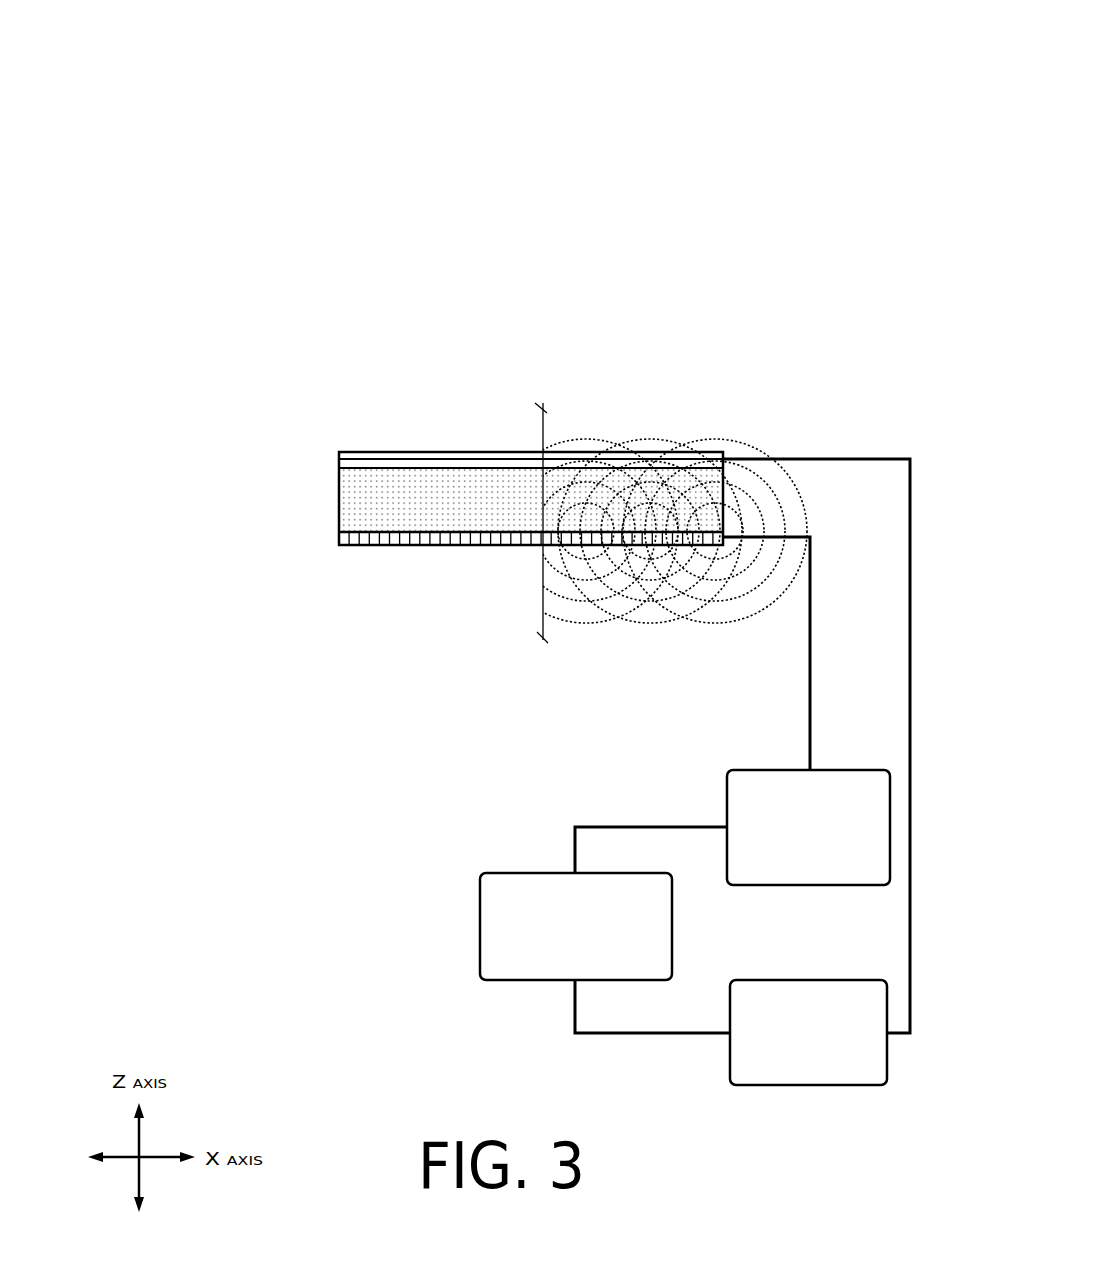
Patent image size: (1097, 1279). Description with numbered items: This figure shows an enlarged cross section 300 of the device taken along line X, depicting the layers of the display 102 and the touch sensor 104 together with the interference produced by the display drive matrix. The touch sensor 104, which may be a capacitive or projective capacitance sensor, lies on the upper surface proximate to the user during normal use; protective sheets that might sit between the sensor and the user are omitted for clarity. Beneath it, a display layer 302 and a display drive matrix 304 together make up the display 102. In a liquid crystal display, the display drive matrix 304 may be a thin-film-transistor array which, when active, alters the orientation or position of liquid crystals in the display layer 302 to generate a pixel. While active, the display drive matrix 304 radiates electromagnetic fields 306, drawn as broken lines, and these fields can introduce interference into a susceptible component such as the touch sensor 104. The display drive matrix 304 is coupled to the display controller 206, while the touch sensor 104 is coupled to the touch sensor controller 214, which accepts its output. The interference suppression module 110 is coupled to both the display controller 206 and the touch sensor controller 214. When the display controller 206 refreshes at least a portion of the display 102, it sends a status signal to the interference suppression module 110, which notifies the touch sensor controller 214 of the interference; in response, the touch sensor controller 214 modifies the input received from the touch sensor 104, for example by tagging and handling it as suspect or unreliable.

The enlarged cross section 300 is at (624, 89).
The display 102 is at (310, 467).
The touch sensor 104 is at (528, 458).
The display layer 302 is at (357, 482).
The display drive matrix 304 is at (465, 535).
The EM fields 306 is at (722, 633).
The display controller 206 is at (790, 856).
The interference suppression module 110 is at (559, 972).
The touch sensor controller 214 is at (790, 1066).